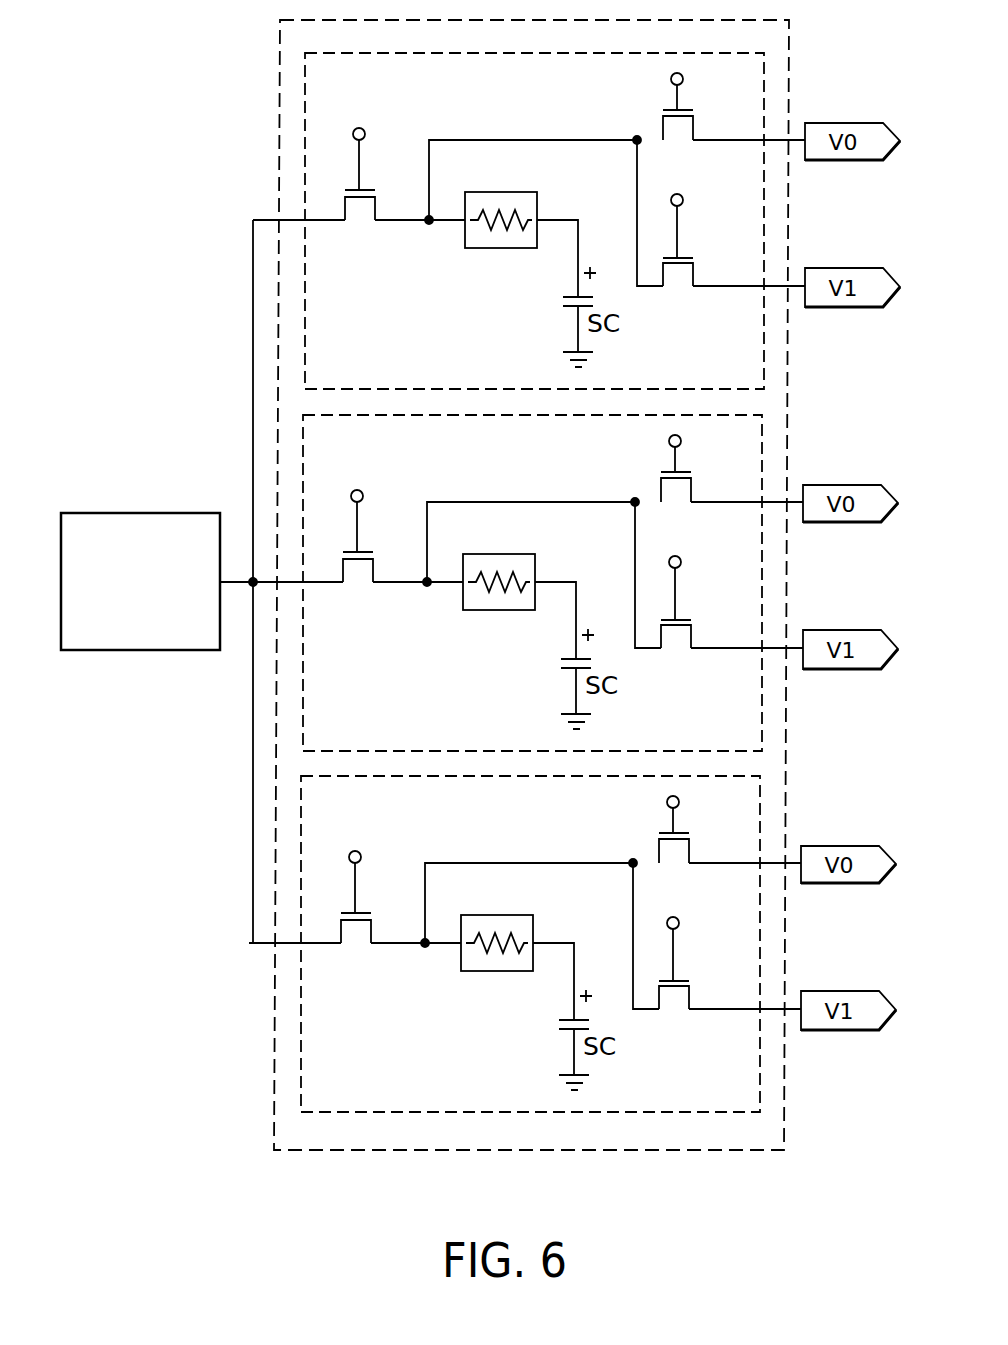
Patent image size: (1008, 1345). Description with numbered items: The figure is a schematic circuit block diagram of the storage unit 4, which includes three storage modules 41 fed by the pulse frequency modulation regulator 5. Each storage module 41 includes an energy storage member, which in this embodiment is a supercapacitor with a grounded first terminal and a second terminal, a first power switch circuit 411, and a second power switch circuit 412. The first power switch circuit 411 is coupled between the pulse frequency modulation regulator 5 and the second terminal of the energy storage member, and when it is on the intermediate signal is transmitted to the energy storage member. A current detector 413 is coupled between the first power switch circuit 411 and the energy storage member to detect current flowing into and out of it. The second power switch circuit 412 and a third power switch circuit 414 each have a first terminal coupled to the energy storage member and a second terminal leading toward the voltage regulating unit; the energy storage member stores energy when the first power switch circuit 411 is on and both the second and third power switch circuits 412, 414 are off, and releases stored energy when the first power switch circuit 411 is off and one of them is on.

The storage unit 4 is at (276, 43).
The pulse frequency modulation regulator 5 is at (138, 513).
The storage module 41 is at (764, 97).
The first power switch circuit 411 is at (370, 188).
The second power switch circuit 412 is at (687, 109).
The current detector 413 is at (530, 192).
The third power switch circuit 414 is at (683, 257).